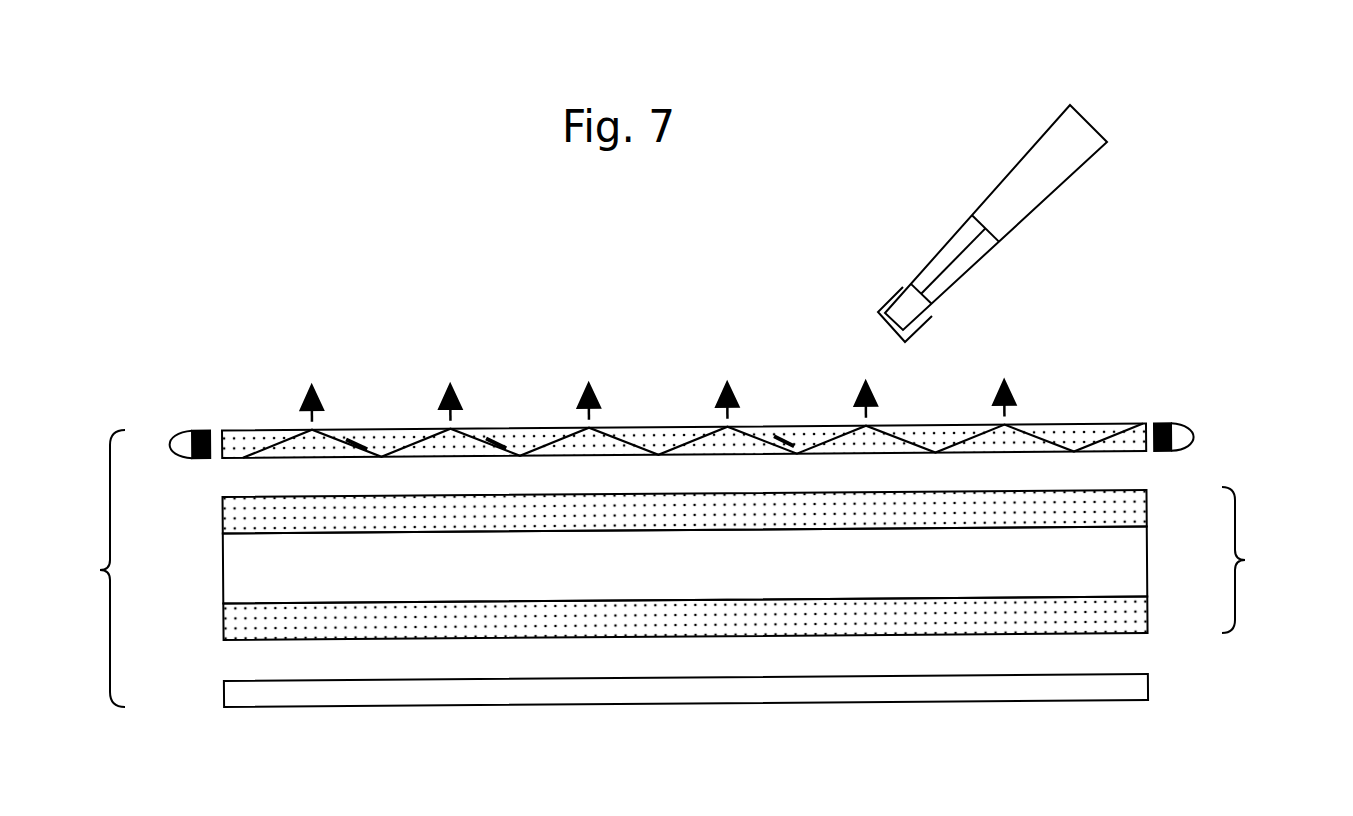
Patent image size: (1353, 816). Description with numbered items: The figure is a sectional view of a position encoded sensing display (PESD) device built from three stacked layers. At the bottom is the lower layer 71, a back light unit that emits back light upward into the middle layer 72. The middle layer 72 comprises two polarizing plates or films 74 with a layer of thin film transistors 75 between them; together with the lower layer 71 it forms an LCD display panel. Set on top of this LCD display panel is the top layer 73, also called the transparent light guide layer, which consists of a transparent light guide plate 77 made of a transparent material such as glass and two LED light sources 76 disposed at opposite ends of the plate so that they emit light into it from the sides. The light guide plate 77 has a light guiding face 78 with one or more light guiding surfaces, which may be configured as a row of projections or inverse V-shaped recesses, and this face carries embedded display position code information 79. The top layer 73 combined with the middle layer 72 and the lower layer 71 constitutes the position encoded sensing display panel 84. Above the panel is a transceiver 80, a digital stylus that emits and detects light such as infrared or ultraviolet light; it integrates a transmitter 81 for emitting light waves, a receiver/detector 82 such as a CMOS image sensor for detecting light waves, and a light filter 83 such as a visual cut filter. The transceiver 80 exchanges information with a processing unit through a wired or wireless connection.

The lower layer 71 is at (1153, 688).
The middle layer 72 is at (757, 563).
The top layer 73 is at (1242, 437).
The polarizing plates 74 is at (1152, 503).
The layer of thin film transistors 75 is at (1152, 560).
The LED light sources 76 is at (190, 427).
The transparent light guide plate 77 is at (1074, 424).
The light guiding surface 78 is at (268, 455).
The display position code information 79 is at (362, 437).
The transceiver 80 is at (1002, 223).
The transmitter 81 is at (944, 246).
The receiver/detector 82 is at (966, 268).
The light filter 83 is at (876, 314).
The position encoded sensing display panel 84 is at (99, 570).